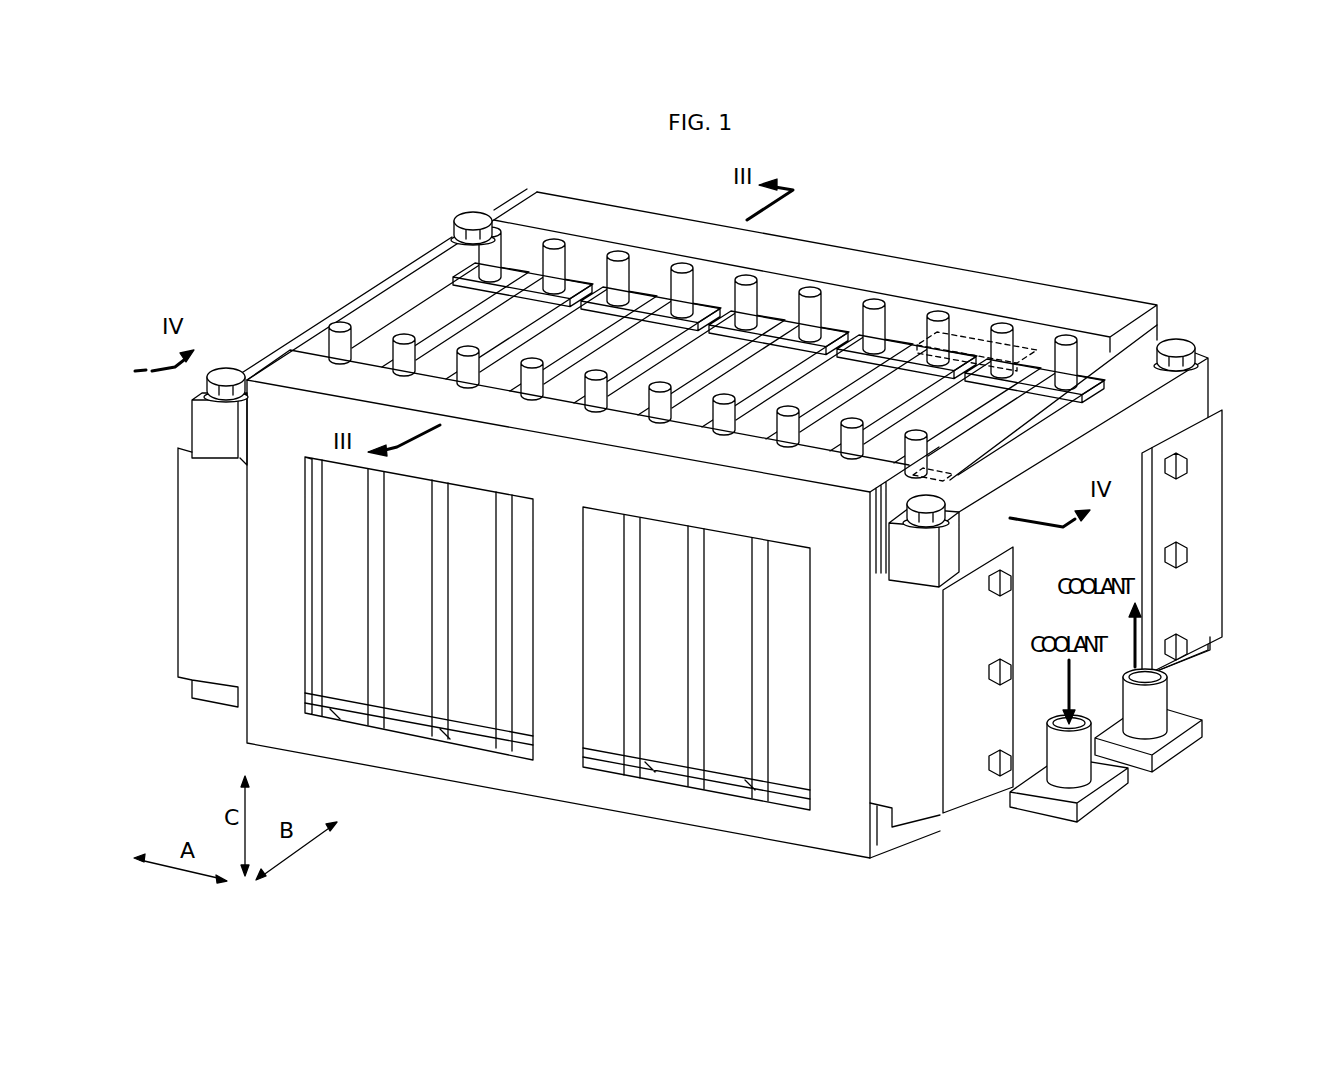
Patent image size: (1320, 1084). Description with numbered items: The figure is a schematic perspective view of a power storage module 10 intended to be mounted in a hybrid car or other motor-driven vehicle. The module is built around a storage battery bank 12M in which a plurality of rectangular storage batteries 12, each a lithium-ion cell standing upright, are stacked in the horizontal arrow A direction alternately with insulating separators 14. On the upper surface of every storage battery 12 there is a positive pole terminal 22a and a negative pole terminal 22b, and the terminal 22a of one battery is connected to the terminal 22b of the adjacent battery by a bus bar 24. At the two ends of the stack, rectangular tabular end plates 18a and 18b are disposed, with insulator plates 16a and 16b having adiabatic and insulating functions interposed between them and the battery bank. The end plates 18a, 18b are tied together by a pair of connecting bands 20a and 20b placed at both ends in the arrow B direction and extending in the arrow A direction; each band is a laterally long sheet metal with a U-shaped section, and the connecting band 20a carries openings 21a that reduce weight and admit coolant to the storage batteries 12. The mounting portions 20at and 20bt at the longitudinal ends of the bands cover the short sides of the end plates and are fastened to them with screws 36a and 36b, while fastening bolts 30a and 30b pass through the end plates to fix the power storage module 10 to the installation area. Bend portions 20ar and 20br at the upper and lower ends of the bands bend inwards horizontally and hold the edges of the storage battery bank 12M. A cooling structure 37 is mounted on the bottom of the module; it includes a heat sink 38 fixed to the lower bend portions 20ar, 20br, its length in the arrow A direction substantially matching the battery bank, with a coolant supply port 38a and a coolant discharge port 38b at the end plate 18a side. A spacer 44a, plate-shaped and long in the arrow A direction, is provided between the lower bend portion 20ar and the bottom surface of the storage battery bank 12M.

The power storage module 10 is at (658, 158).
The storage battery 12 is at (400, 541).
The storage battery bank 12M is at (252, 571).
The separator 14 is at (440, 621).
The insulator plate 16a is at (885, 585).
The insulator plate 16b is at (242, 428).
The end plate 18a is at (1211, 376).
The end plate 18b is at (358, 298).
The connecting band 20a is at (458, 768).
The bend portion 20ar is at (885, 832).
The mounting portion 20at is at (975, 780).
The connecting band 20b is at (1128, 300).
The bend portion 20br is at (850, 262).
The mounting portion 20bt is at (1195, 600).
The opening 21a is at (812, 714).
The positive pole terminal 22a is at (908, 462).
The negative pole terminal 22b is at (850, 437).
The bus bar 24 is at (950, 458).
The fastening bolt 30a is at (926, 528).
The fastening bolt 30b is at (226, 368).
The screw 36a is at (994, 684).
The screw 36b is at (1182, 550).
The cooling structure 37 is at (1148, 788).
The heat sink 38 is at (1004, 820).
The coolant supply port 38a is at (1078, 778).
The coolant discharge port 38b is at (1155, 708).
The spacer 44a is at (893, 828).